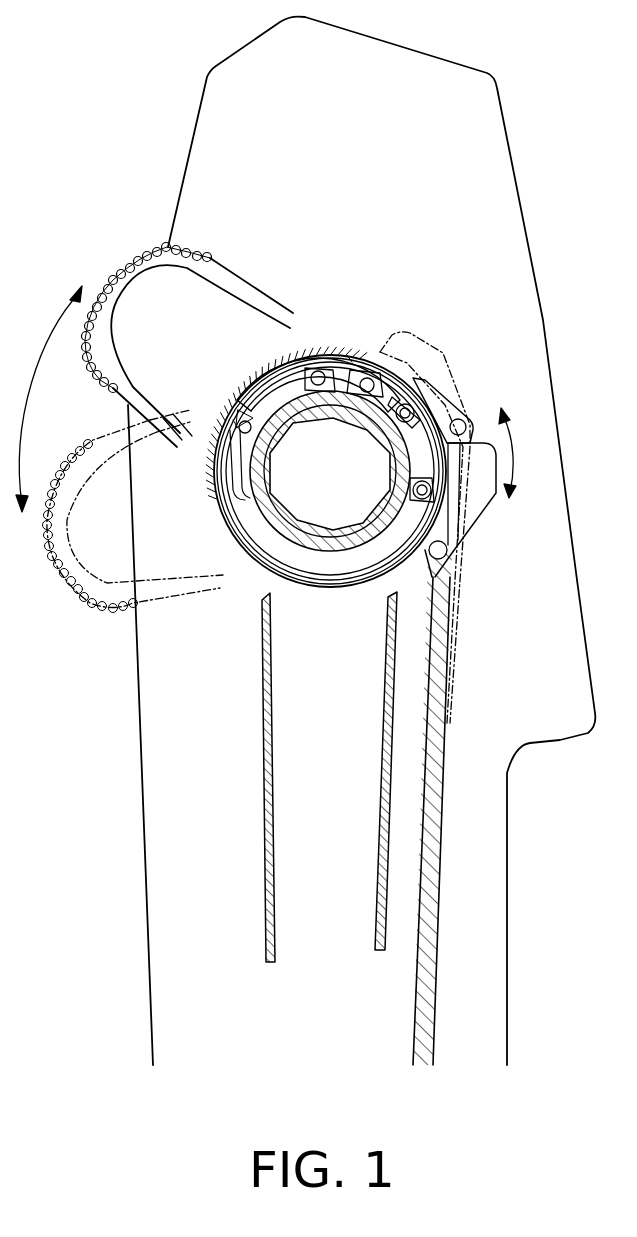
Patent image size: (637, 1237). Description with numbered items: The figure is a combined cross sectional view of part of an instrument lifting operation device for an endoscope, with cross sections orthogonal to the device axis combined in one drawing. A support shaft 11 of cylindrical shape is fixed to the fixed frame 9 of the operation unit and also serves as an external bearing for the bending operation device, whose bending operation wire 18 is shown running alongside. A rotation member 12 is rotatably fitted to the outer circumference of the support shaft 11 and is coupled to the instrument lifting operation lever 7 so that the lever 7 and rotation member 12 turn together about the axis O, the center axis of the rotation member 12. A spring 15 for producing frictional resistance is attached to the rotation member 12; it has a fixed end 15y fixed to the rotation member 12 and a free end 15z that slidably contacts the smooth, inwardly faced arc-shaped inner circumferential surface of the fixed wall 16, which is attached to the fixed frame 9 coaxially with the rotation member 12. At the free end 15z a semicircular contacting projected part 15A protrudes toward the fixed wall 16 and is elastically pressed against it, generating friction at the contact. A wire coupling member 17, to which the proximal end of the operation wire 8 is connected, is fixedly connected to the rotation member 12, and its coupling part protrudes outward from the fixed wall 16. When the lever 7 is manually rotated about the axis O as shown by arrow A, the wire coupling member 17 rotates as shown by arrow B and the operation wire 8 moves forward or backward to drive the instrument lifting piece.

The instrument lifting operation lever 7 is at (115, 276).
The operation wire 8 is at (432, 880).
The fixed frame 9 is at (533, 235).
The support shaft 11 is at (330, 545).
The rotation member 12 is at (268, 548).
The spring 15 is at (290, 373).
The contacting projected part 15A is at (238, 400).
The fixed end 15y is at (347, 355).
The free end 15z is at (233, 420).
The fixed wall 16 is at (218, 505).
The wire coupling member 17 is at (477, 487).
The bending operation wire 18 is at (383, 847).
The axis O is at (330, 467).
The arrow A is at (45, 399).
The arrow B is at (516, 453).